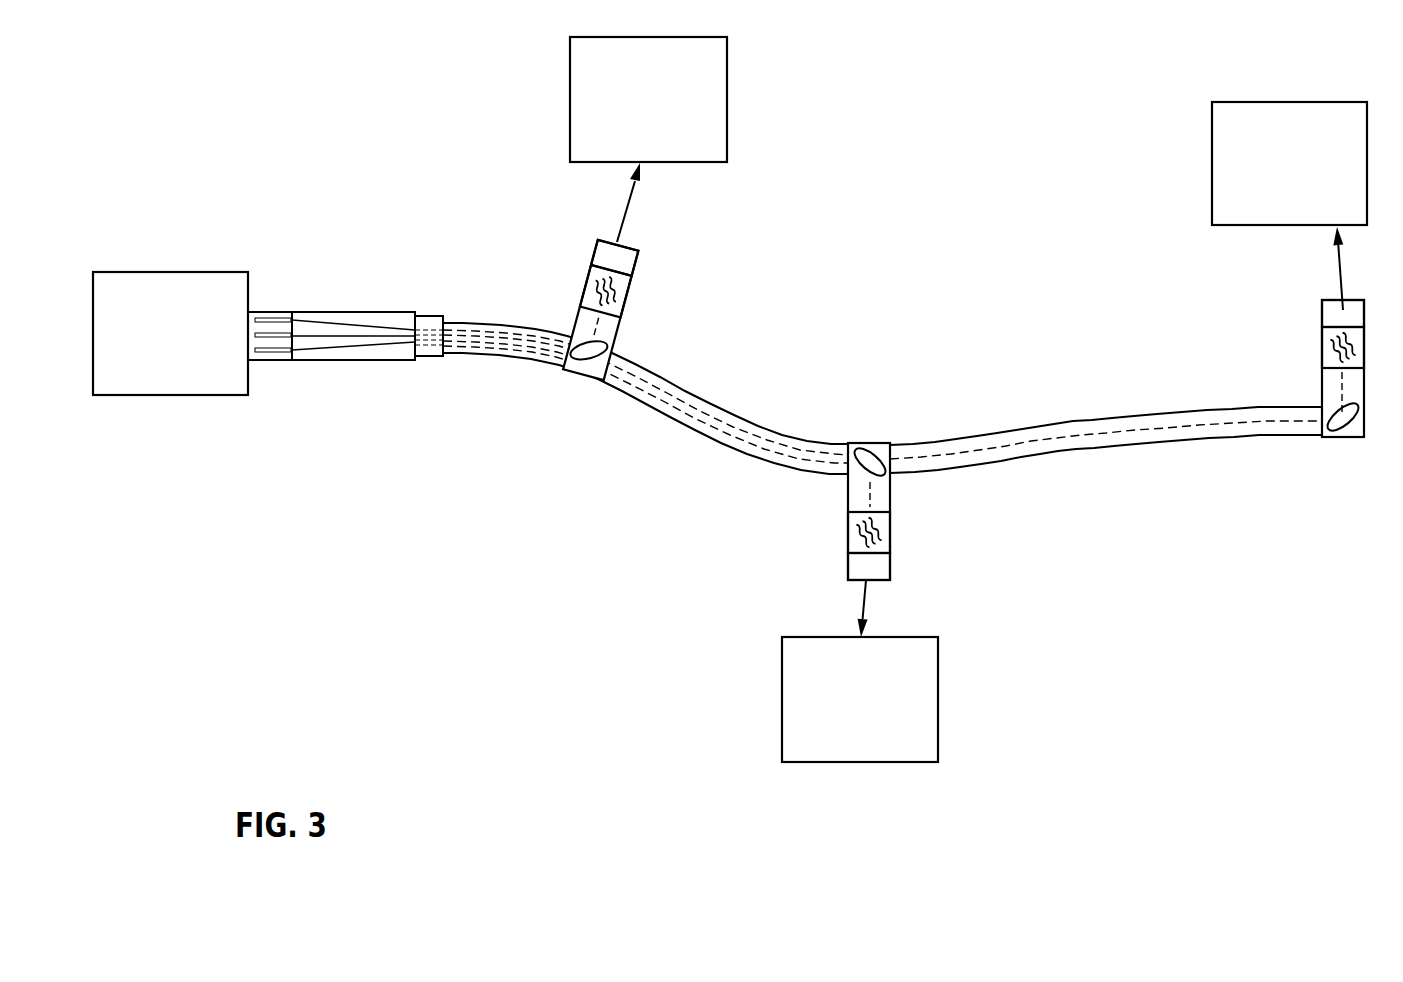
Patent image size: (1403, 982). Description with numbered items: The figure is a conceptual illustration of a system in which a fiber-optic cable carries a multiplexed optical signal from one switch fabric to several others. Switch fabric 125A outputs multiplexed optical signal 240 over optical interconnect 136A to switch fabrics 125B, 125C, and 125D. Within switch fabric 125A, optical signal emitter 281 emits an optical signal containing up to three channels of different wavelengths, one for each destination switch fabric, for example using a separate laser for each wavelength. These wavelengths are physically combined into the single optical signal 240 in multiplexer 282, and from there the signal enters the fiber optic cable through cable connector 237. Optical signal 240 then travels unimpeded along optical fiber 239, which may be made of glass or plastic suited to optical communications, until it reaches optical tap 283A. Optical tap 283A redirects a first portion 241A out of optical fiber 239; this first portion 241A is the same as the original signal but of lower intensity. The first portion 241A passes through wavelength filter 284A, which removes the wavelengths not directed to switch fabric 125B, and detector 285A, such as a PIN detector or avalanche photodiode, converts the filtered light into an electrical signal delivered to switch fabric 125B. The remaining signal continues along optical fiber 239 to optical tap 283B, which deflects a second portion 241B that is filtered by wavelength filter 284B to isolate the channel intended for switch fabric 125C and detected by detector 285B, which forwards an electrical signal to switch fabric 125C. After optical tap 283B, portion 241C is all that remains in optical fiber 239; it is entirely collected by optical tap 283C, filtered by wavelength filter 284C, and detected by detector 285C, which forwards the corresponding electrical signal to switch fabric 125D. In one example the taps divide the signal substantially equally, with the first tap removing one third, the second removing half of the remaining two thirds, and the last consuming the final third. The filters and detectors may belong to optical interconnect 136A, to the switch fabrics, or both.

The optical interconnect 136A is at (352, 192).
The switch fabric 125A is at (144, 370).
The switch fabric 125B is at (622, 137).
The switch fabric 125C is at (887, 736).
The switch fabric 125D is at (1263, 200).
The optical signal emitter 281 is at (286, 311).
The multiplexer 282 is at (392, 311).
The cable connector 237 is at (440, 362).
The optical signal 240 is at (515, 341).
The optical fiber 239 is at (1113, 411).
The first portion 241A is at (593, 335).
The second portion 241B is at (870, 492).
The portion 241C is at (1030, 443).
The optical tap 283A is at (613, 338).
The optical tap 283B is at (862, 442).
The optical tap 283C is at (1358, 438).
The wavelength filter 284A is at (628, 297).
The wavelength filter 284B is at (890, 537).
The wavelength filter 284C is at (1322, 349).
The detector 285A is at (592, 262).
The detector 285B is at (890, 570).
The detector 285C is at (1322, 302).